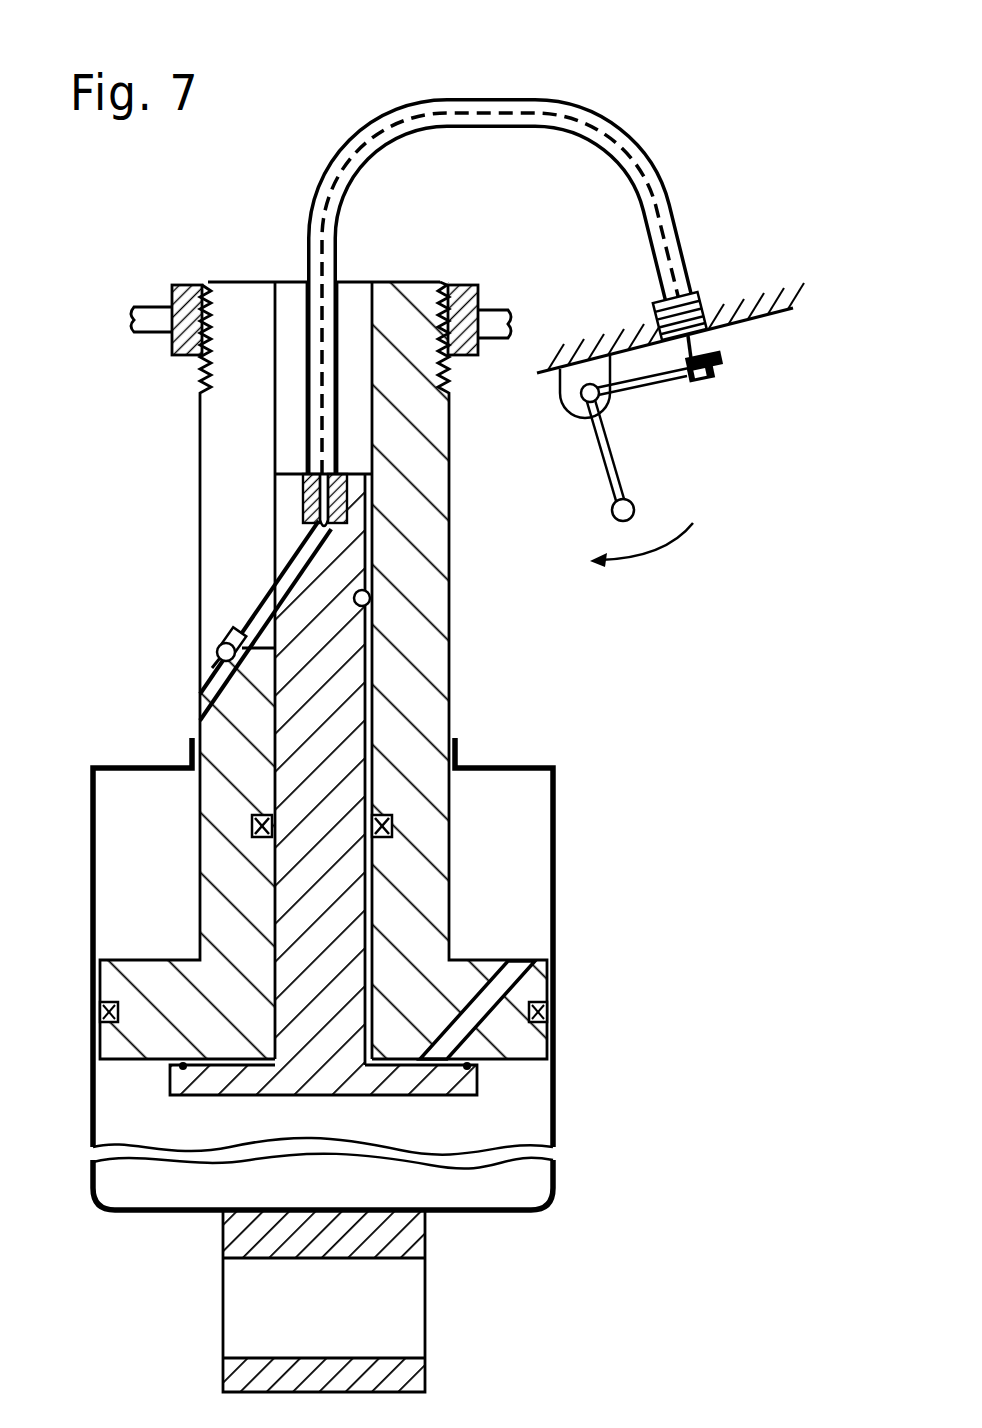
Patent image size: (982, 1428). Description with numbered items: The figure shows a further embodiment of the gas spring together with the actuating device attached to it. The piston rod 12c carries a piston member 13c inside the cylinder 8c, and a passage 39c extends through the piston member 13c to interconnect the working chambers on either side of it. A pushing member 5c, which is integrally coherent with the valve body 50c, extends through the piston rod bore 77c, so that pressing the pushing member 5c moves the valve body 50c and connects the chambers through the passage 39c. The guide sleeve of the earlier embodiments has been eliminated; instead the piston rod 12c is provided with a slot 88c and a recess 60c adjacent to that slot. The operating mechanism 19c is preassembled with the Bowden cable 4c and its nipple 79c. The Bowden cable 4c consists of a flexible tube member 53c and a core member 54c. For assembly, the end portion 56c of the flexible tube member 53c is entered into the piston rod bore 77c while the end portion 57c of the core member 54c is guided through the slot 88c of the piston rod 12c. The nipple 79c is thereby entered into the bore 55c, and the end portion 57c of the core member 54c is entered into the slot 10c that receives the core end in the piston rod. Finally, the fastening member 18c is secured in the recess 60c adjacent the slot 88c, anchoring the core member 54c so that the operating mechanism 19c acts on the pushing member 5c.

The Bowden cable 4c is at (518, 252).
The flexible tube member 53c is at (382, 114).
The core member 54c is at (520, 115).
The operating mechanism 19c is at (562, 396).
The piston rod 12c is at (425, 655).
The recess 60c is at (210, 682).
The slot 88c is at (223, 492).
The slot 10c is at (287, 518).
The end portion of the flexible tube member 56c is at (305, 432).
The pushing member 5c is at (333, 708).
The valve body 50c is at (462, 1088).
The bore 55c is at (302, 492).
The nipple 79c is at (347, 495).
The end portion of the core member 57c is at (293, 556).
The fastening member 18c is at (220, 640).
The piston rod bore 77c is at (370, 598).
The piston member 13c is at (522, 1047).
The passage 39c is at (508, 972).
The cylinder 8c is at (555, 840).